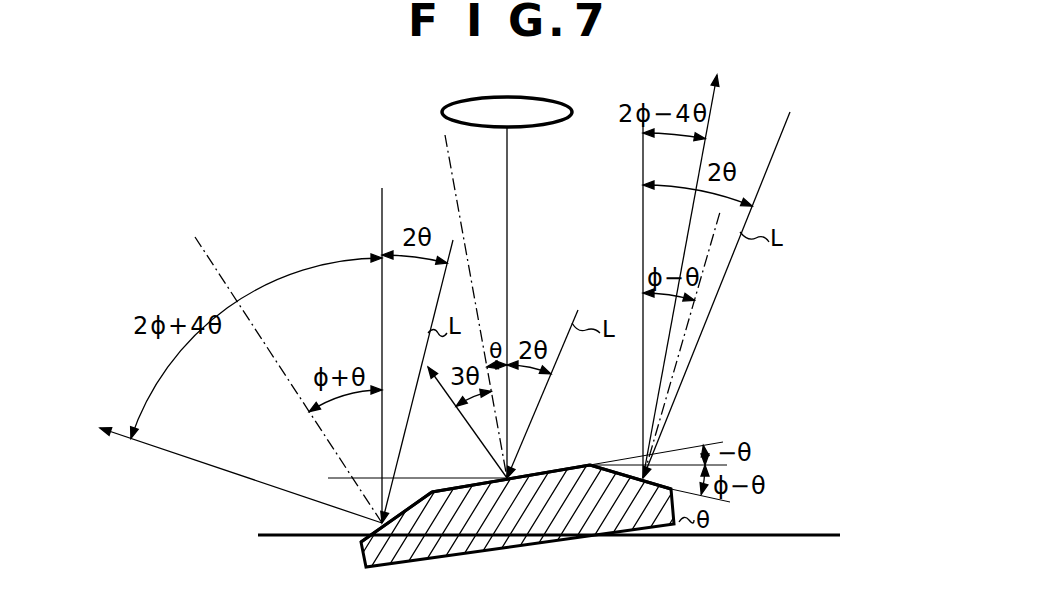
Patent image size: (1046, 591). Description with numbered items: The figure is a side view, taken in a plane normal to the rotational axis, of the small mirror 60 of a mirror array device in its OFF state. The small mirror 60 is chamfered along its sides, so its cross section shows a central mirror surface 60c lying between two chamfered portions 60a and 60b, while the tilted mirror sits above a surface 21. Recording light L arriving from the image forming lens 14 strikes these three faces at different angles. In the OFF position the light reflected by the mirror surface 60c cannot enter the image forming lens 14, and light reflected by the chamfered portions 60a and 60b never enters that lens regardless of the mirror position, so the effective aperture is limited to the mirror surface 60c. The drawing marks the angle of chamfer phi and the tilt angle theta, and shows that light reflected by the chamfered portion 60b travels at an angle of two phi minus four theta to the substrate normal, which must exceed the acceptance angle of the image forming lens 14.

The image forming lens 14 is at (554, 108).
The reference plane 21 is at (813, 533).
The small mirror 60 is at (555, 546).
The chamfered portion 60a is at (408, 505).
The chamfered portion 60b is at (621, 468).
The mirror surface 60c is at (537, 473).